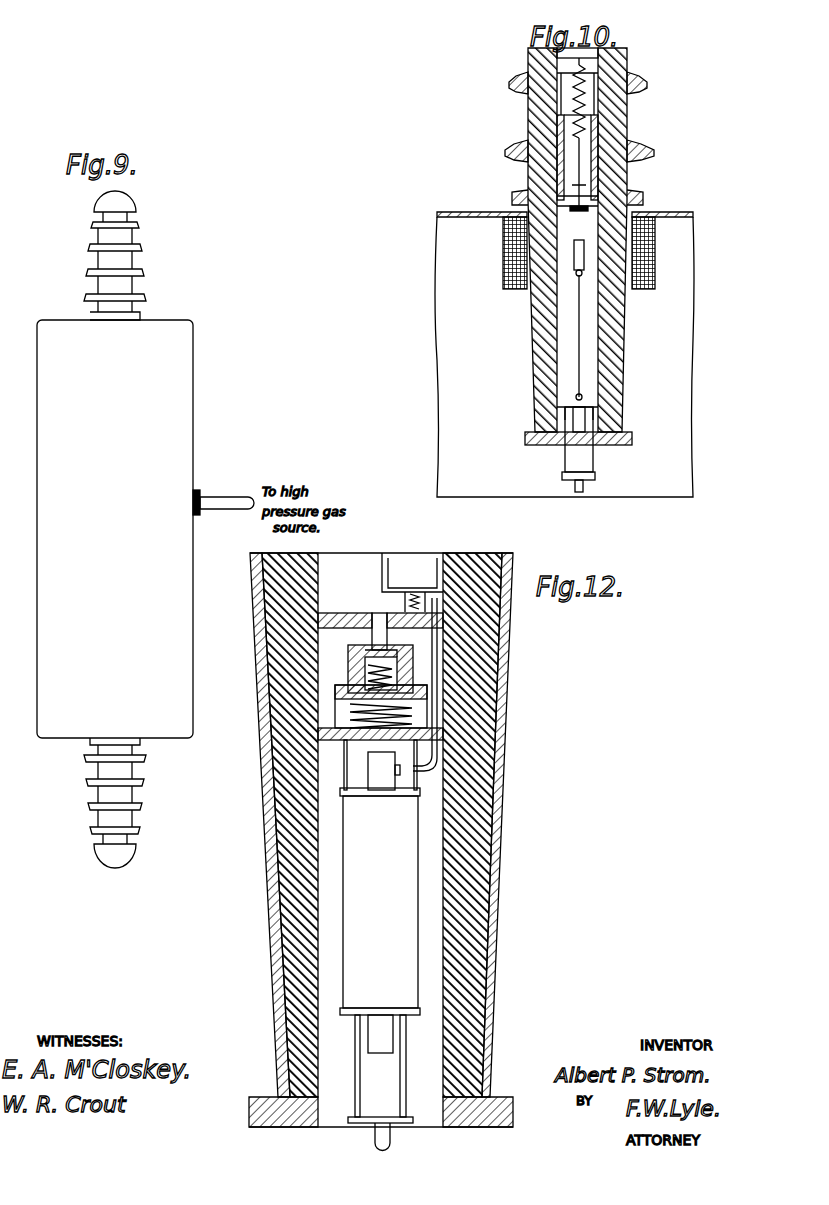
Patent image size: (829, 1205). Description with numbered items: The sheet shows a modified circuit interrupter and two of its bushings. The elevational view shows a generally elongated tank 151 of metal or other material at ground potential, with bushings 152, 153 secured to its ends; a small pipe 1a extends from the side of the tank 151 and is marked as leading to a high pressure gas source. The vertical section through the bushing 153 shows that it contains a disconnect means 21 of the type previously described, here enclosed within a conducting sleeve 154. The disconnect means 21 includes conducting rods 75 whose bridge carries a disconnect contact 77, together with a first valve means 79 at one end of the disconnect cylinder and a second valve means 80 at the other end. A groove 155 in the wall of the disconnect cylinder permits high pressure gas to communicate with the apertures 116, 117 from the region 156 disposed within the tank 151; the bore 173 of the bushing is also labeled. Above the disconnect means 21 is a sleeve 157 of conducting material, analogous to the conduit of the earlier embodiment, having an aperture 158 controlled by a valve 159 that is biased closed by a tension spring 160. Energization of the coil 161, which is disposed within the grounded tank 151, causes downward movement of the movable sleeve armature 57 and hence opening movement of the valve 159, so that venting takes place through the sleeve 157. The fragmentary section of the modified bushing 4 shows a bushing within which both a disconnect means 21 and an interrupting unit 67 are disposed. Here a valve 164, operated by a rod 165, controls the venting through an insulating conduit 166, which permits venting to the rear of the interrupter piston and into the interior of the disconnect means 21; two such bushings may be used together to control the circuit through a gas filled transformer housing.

In FIG. 9, the tank 151 is at (193, 430).
In FIG. 10, the tank 151 is at (461, 212).
In FIG. 9, the bushing 152 is at (144, 276).
In FIG. 9, the bushing 153 is at (142, 785).
In FIG. 10, the bushing 153 is at (630, 152).
In FIG. 9, the gas inlet pipe 1a is at (222, 495).
In FIG. 10, the coil 161 is at (650, 268).
In FIG. 10, the movable sleeve armature 57 is at (628, 126).
In FIG. 10, the valve 159 is at (528, 182).
In FIG. 10, the region 156 is at (600, 413).
In FIG. 10, the tension spring 160 is at (593, 86).
In FIG. 10, the aperture 158 is at (628, 180).
In FIG. 10, the sleeve 157 is at (630, 196).
In FIG. 10, the first valve means 79 is at (578, 244).
In FIG. 10, the disconnect means 21 is at (598, 330).
In FIG. 12, the disconnect means 21 is at (380, 969).
In FIG. 10, the aperture 116 is at (577, 275).
In FIG. 10, the groove 155 is at (628, 322).
In FIG. 10, the conducting sleeve 154 is at (630, 352).
In FIG. 10, the bore 173 is at (566, 367).
In FIG. 10, the aperture 117 is at (566, 397).
In FIG. 10, the second valve means 80 is at (630, 409).
In FIG. 10, the conducting rods 75 is at (594, 460).
In FIG. 10, the disconnect contact 77 is at (585, 488).
In FIG. 12, the bushing 4 is at (500, 791).
In FIG. 12, the rod 165 is at (387, 577).
In FIG. 12, the valve 164 is at (426, 596).
In FIG. 12, the interrupting unit 67 is at (380, 701).
In FIG. 12, the insulating conduit 166 is at (438, 661).